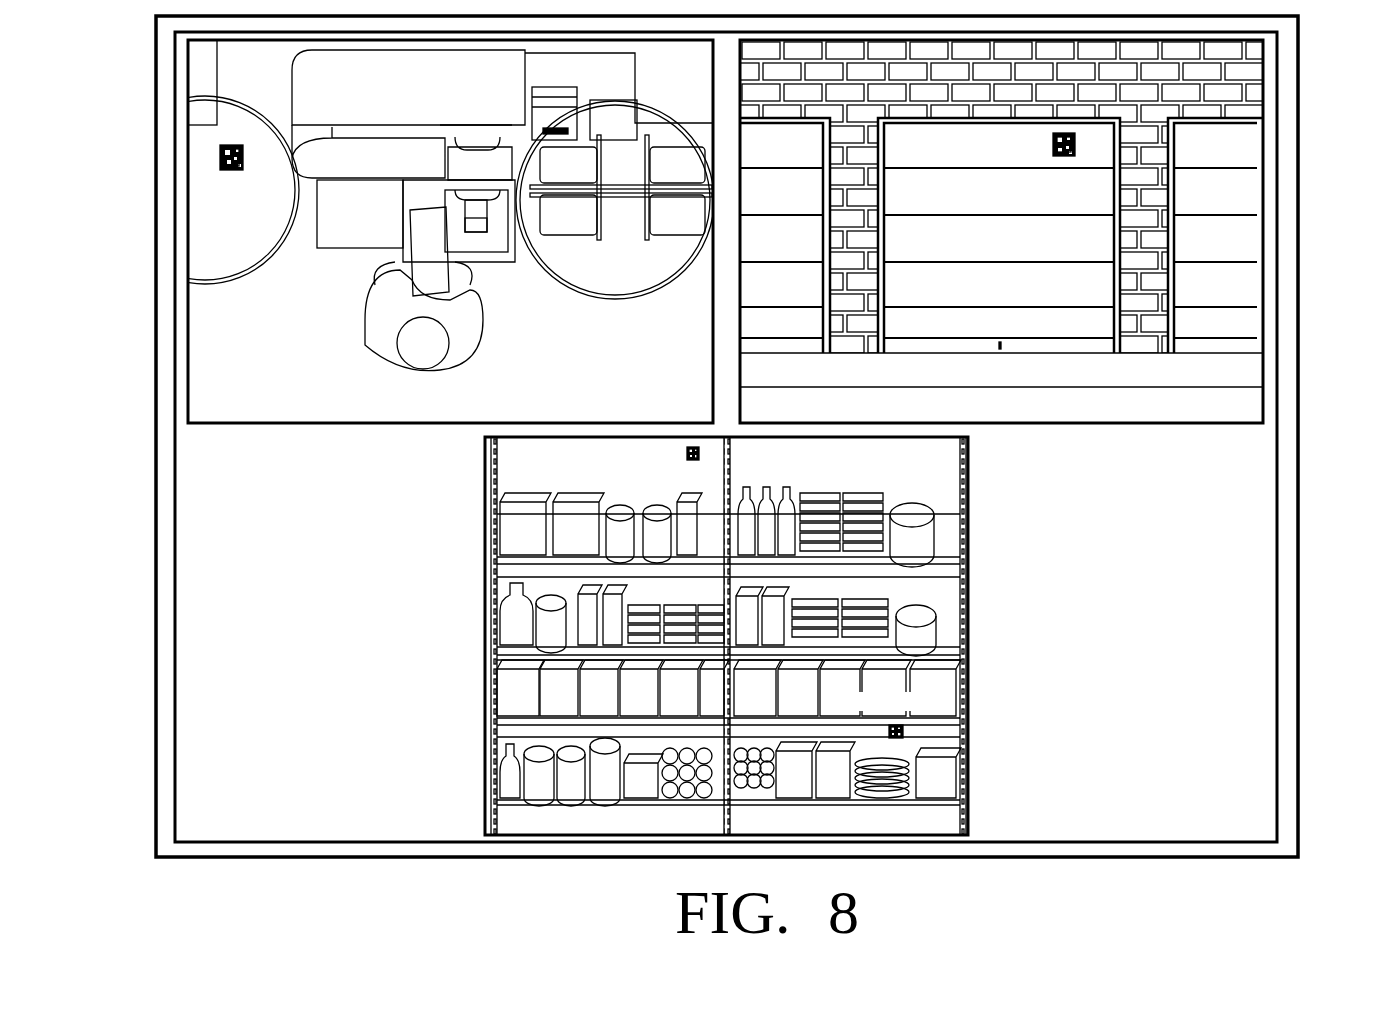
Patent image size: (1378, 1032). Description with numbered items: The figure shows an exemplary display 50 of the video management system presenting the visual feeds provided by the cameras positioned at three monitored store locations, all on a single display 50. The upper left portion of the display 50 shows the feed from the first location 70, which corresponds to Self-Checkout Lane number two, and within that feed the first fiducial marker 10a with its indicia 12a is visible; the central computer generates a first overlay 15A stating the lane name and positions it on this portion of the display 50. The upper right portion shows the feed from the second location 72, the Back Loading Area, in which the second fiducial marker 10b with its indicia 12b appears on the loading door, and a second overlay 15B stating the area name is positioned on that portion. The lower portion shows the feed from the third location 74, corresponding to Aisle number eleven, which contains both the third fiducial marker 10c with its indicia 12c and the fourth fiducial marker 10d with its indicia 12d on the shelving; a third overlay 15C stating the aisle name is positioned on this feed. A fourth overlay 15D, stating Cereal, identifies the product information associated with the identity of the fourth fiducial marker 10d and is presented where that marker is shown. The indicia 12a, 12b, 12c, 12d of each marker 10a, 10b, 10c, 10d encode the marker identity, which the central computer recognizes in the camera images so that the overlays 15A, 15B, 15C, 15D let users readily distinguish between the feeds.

The display 50 is at (156, 272).
The first location 70 is at (215, 326).
The first overlay 15A is at (197, 410).
The first fiducial marker 10a is at (220, 152).
The indicia 12a is at (232, 170).
The second overlay 15B is at (968, 406).
The second location 72 is at (1238, 142).
The second fiducial marker 10b is at (1053, 145).
The indicia 12b is at (1062, 157).
The third overlay 15C is at (492, 822).
The third location 74 is at (962, 592).
The fourth overlay 15D is at (942, 702).
The third fiducial marker 10c is at (687, 452).
The indicia 12c is at (700, 455).
The fourth fiducial marker 10d is at (903, 730).
The indicia 12d is at (903, 735).